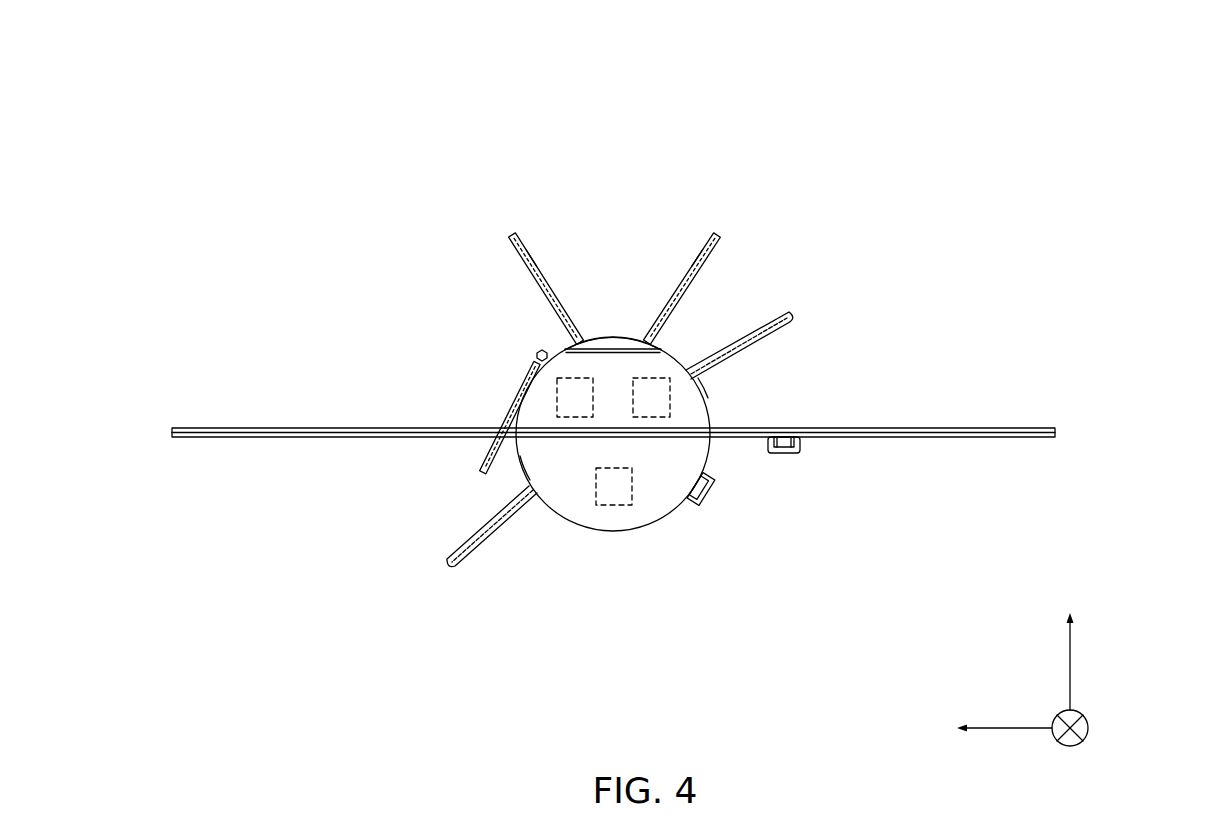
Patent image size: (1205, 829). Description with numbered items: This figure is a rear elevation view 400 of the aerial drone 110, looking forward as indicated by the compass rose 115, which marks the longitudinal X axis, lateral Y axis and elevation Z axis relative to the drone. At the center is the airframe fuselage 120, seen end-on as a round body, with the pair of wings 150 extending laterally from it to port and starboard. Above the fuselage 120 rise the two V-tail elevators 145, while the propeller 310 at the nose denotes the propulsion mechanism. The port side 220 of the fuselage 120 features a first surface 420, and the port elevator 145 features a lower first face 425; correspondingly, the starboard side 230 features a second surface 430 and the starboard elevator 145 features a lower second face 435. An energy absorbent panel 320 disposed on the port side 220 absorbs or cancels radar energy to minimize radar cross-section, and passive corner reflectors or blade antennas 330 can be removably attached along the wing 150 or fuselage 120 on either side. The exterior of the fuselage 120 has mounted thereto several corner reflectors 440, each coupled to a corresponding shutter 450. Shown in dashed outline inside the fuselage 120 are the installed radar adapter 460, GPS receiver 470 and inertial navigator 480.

The rear elevation view 400 is at (220, 90).
The aerial drone 110 is at (691, 336).
The compass rose 115 is at (1010, 698).
The airframe fuselage 120 is at (618, 339).
The V-tail elevators 145 is at (514, 238).
The wings 150 is at (288, 427).
The port side 220 is at (134, 444).
The starboard side 230 is at (1102, 445).
The propeller 310 is at (778, 316).
The energy absorbent panel 320 is at (506, 412).
The blade antennas 330 is at (537, 353).
The first surface 420 is at (506, 475).
The lower first face 425 is at (525, 258).
The second surface 430 is at (720, 387).
The lower second face 435 is at (704, 262).
The corner reflectors 440 is at (787, 455).
The shutter 450 is at (801, 447).
The radar adapter 460 is at (616, 506).
The GPS receiver 470 is at (578, 418).
The inertial navigator 480 is at (648, 418).